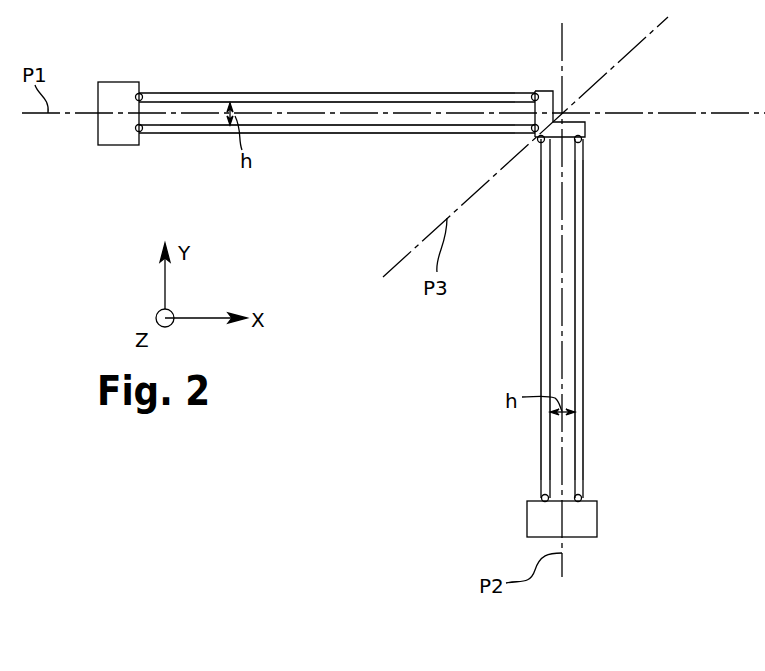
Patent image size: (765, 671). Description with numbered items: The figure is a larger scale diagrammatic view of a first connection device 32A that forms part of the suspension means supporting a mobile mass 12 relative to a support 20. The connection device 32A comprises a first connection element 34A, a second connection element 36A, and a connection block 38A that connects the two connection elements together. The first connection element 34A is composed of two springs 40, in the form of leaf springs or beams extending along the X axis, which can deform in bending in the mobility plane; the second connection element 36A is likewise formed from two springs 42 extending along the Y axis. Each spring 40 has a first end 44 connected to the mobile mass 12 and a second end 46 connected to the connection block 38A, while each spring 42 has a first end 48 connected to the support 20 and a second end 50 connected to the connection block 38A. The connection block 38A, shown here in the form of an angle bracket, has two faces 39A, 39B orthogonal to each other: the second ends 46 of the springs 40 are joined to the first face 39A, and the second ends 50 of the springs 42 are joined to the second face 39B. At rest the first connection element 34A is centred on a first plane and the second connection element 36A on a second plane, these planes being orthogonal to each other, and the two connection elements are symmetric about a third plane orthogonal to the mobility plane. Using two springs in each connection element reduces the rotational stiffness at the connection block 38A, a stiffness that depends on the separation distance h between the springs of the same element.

The mobile mass 12 is at (115, 136).
The support 20 is at (580, 523).
The first connection device 32A is at (437, 405).
The first connection element 34A is at (280, 93).
The second connection element 36A is at (583, 440).
The connection block 38A is at (605, 94).
The first face 39A is at (537, 116).
The second face 39B is at (551, 133).
The springs 40 is at (359, 126).
The springs 42 is at (550, 333).
The first end 44 is at (143, 127).
The second end 46 is at (531, 128).
The first end 48 is at (548, 497).
The second end 50 is at (544, 142).